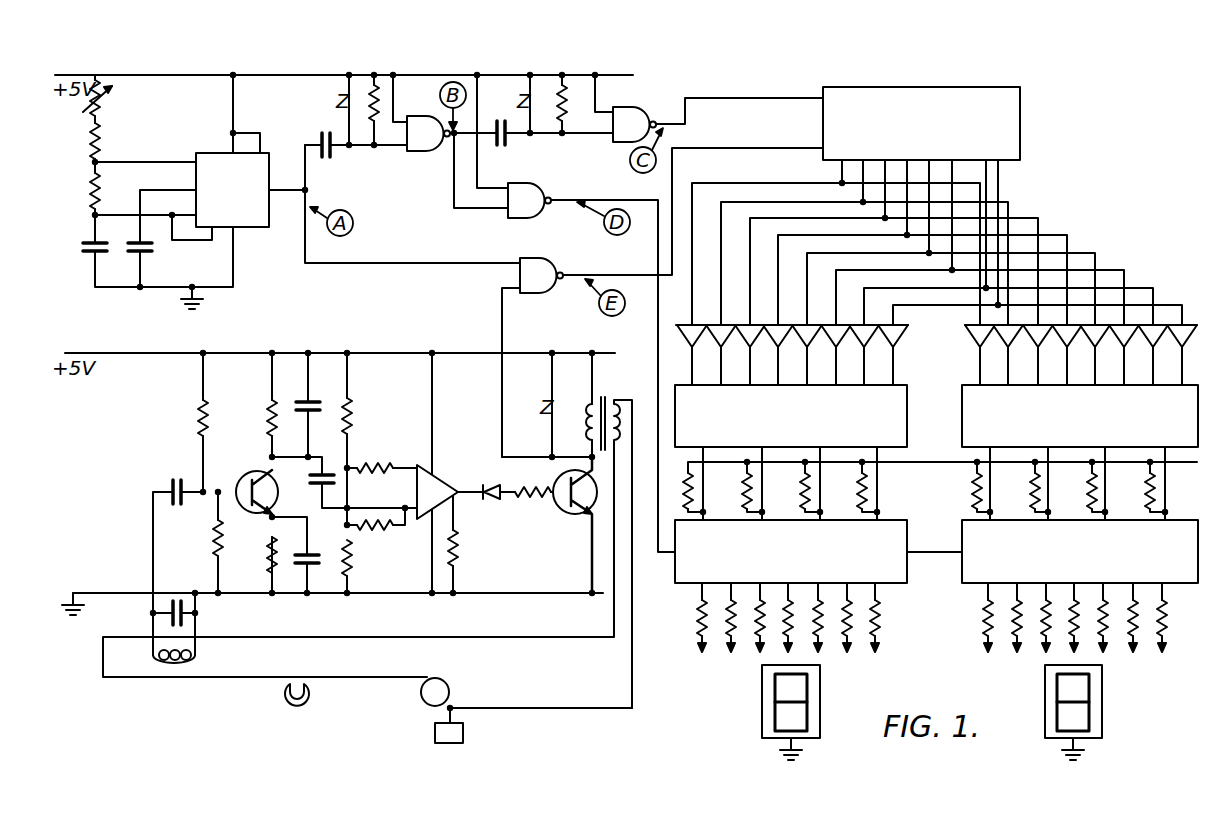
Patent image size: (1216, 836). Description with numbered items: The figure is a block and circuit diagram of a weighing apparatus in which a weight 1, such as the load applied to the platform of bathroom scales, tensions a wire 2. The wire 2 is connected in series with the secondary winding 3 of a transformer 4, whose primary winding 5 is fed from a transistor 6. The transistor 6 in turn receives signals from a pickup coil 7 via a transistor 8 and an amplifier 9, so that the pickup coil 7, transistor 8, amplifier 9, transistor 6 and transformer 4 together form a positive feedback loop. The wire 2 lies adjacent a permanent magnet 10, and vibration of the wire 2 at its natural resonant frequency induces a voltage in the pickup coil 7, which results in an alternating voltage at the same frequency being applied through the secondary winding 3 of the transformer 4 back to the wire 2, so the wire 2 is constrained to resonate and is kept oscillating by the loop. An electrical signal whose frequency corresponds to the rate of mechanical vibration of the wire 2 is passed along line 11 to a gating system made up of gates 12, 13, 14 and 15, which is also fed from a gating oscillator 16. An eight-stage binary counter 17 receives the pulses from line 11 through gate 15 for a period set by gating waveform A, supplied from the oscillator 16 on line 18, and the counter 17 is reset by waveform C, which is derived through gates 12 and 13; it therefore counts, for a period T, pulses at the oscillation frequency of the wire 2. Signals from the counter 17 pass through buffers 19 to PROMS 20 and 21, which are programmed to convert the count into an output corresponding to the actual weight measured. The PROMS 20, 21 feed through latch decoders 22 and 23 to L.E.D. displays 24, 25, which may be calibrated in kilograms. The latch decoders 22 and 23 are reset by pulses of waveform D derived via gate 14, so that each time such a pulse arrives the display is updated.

The weight 1 is at (463, 733).
The wire 2 is at (378, 677).
The secondary winding 3 is at (618, 410).
The transformer 4 is at (373, 539).
The primary winding 5 is at (588, 410).
The transistor 6 is at (563, 506).
The pickup coil 7 is at (197, 652).
The transistor 8 is at (248, 508).
The amplifier 9 is at (443, 487).
The permanent magnet 10 is at (305, 704).
The line 11 is at (503, 314).
The gate 12 is at (419, 136).
The gate 13 is at (630, 116).
The gate 14 is at (522, 207).
The gate 15 is at (535, 270).
The gating oscillator 16 is at (244, 201).
The 8-stage binary counter 17 is at (932, 135).
The line 18 is at (305, 252).
The buffers 19 is at (1003, 333).
The PROM 20 is at (800, 427).
The PROM 21 is at (1089, 427).
The latch decoder 22 is at (790, 564).
The latch decoder 23 is at (1089, 564).
The L.E.D. display 24 is at (820, 675).
The L.E.D. display 25 is at (1102, 675).